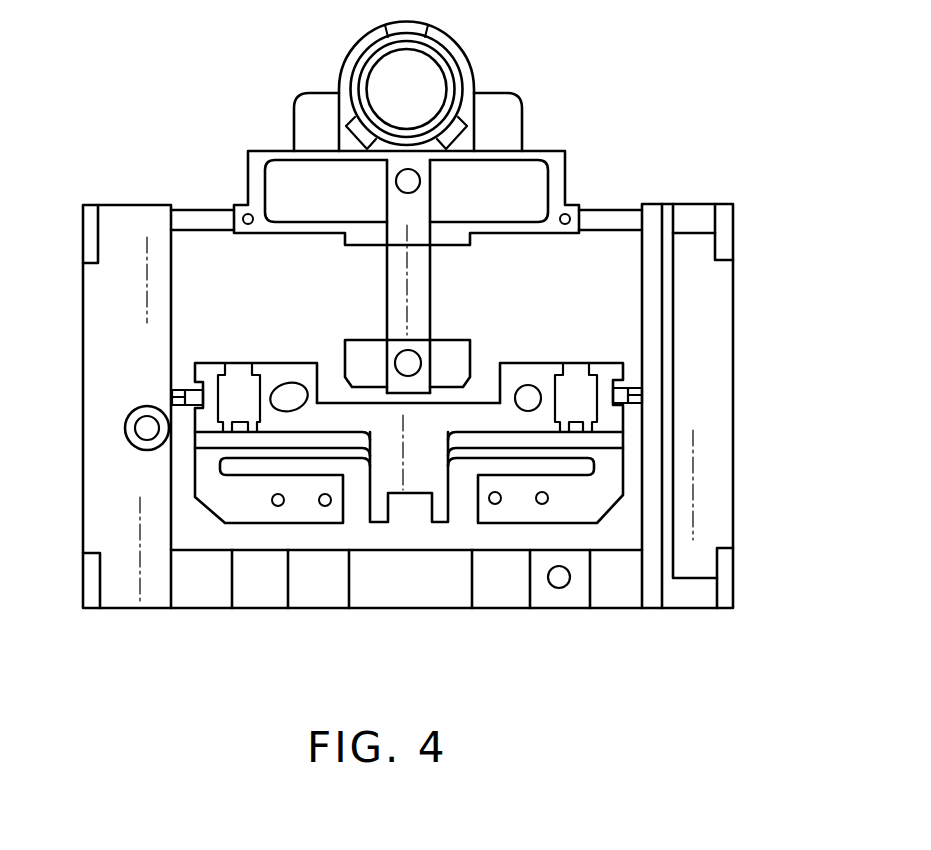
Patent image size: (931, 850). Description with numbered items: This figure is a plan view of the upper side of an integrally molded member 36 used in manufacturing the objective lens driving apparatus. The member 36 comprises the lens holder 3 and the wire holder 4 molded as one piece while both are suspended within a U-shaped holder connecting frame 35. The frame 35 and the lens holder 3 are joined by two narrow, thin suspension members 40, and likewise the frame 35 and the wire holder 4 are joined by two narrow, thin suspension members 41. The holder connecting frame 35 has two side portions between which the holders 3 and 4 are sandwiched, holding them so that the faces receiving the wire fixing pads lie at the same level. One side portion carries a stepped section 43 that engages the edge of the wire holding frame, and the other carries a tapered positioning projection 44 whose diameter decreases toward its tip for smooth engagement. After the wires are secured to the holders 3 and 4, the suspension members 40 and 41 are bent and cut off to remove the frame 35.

The lens holder 3 is at (525, 122).
The wire holder 4 is at (557, 346).
The holder connecting frame 35 is at (736, 499).
The integrally molded member 36 is at (596, 621).
The suspension members 40 is at (202, 216).
The suspension members 41 is at (178, 391).
The stepped section 43 is at (658, 294).
The projection 44 is at (142, 430).